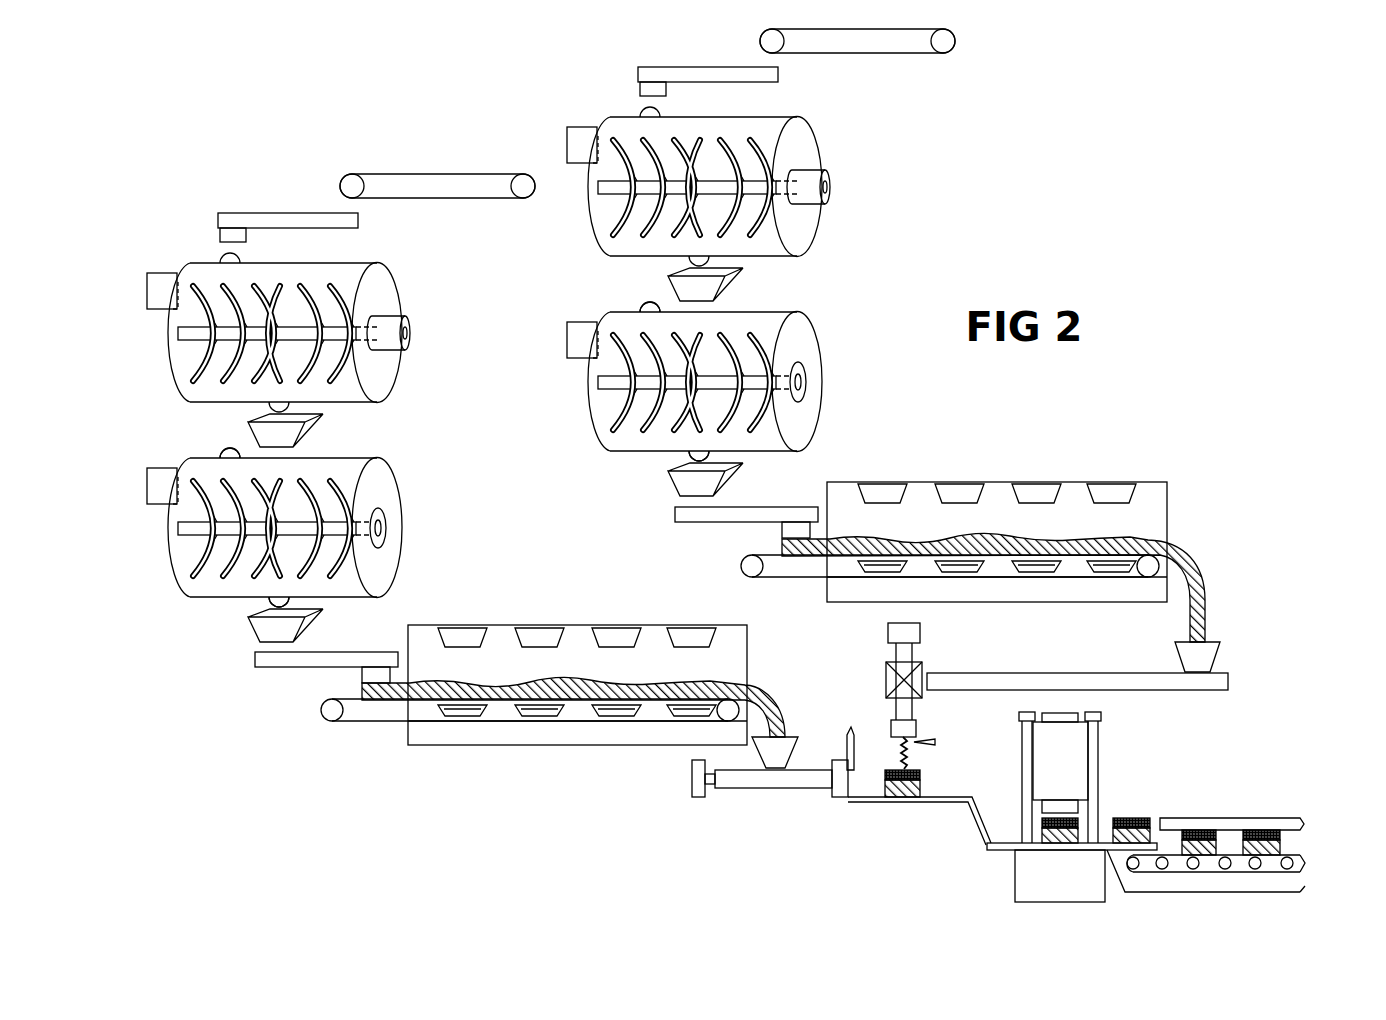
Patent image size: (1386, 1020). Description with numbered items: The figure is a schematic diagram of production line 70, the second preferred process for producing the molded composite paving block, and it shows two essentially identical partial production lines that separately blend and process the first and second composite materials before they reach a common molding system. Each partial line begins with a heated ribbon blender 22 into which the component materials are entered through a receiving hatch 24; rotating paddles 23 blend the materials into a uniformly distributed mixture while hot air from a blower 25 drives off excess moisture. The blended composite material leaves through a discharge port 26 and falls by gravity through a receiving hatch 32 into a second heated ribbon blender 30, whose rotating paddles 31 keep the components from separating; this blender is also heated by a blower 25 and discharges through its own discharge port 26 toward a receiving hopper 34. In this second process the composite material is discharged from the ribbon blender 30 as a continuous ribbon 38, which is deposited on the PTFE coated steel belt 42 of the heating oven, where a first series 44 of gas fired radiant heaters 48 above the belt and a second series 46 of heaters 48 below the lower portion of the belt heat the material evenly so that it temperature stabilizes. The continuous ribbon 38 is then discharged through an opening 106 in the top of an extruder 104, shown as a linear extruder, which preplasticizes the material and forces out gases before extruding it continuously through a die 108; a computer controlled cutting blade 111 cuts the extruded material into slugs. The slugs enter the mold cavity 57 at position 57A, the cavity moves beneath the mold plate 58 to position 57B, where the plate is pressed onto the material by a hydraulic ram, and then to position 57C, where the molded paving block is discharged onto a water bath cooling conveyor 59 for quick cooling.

The ribbon blender 22 is at (402, 292).
The rotating paddles 23 is at (338, 284).
The receiving hatch 24 is at (236, 270).
The blower 25 is at (163, 273).
The discharge port 26 is at (276, 406).
The ribbon blender 30 is at (402, 488).
The rotating paddles 31 is at (333, 592).
The receiving hatch 32 is at (290, 464).
The receiving hopper 34 is at (255, 659).
The continuous ribbon 38 is at (610, 682).
The PTFE coated steel belt 42 is at (364, 722).
The first series of heaters 44 is at (447, 638).
The second series of heaters 46 is at (444, 714).
The gas fired radiant heaters 48 is at (526, 648).
The mold cavity 57 is at (1082, 832).
The position 57A is at (903, 799).
The position 57B is at (1060, 850).
The position 57C is at (1151, 822).
The mold plate 58 is at (1057, 808).
The water bath cooling conveyor 59 is at (1258, 818).
The production line 70 is at (903, 264).
The extruder 104 is at (768, 789).
The opening 106 is at (784, 738).
The die 108 is at (840, 797).
The cutting blade 111 is at (851, 727).